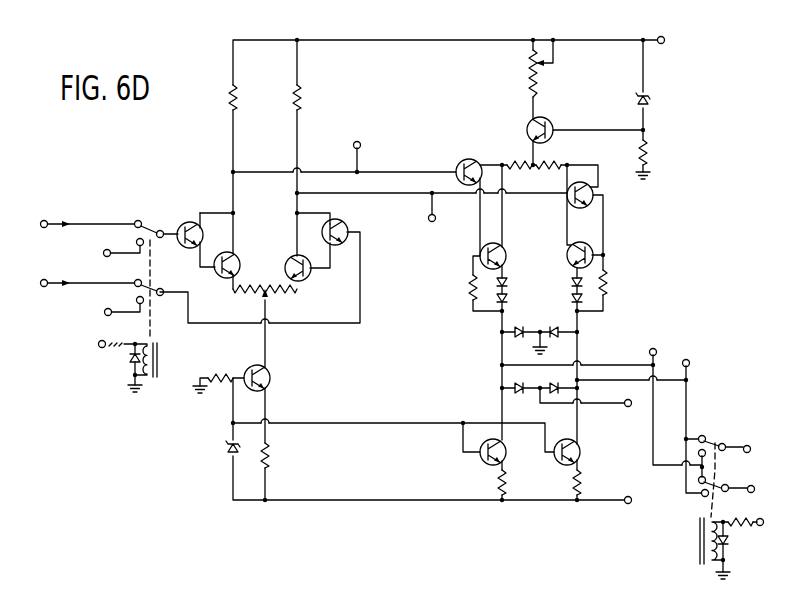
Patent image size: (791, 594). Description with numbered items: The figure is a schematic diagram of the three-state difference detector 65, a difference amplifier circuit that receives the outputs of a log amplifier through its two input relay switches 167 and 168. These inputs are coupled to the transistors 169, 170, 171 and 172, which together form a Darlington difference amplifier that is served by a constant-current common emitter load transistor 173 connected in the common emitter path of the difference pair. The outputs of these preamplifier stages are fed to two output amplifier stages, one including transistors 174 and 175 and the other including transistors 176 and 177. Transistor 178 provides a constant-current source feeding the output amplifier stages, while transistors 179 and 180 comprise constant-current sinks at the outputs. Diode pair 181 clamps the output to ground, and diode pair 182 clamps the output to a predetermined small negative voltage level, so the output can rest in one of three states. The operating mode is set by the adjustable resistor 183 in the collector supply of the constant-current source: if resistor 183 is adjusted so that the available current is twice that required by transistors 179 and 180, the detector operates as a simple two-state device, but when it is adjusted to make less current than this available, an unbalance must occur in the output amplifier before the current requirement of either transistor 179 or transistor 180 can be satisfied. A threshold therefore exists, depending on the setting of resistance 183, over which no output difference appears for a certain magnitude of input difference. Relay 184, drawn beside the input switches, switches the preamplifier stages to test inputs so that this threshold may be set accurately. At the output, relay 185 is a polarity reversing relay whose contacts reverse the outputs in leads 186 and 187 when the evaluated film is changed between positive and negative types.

The three-state difference detector 65 is at (140, 172).
The input relay switch 167 is at (151, 228).
The input relay switch 168 is at (130, 292).
The transistor 169 is at (188, 221).
The transistor 170 is at (347, 223).
The transistor 171 is at (217, 277).
The transistor 172 is at (309, 280).
The constant-current common emitter load transistor 173 is at (270, 385).
The transistor 174 is at (459, 161).
The transistor 175 is at (507, 259).
The transistor 176 is at (603, 195).
The transistor 177 is at (604, 244).
The transistor 178 is at (528, 127).
The transistor 179 is at (482, 464).
The transistor 180 is at (580, 453).
The diode pair 181 is at (547, 327).
The diode pair 182 is at (548, 383).
The resistor 183 is at (538, 68).
The relay 184 is at (160, 357).
The polarity reversing relay 185 is at (698, 548).
The lead 186 is at (746, 441).
The lead 187 is at (750, 491).